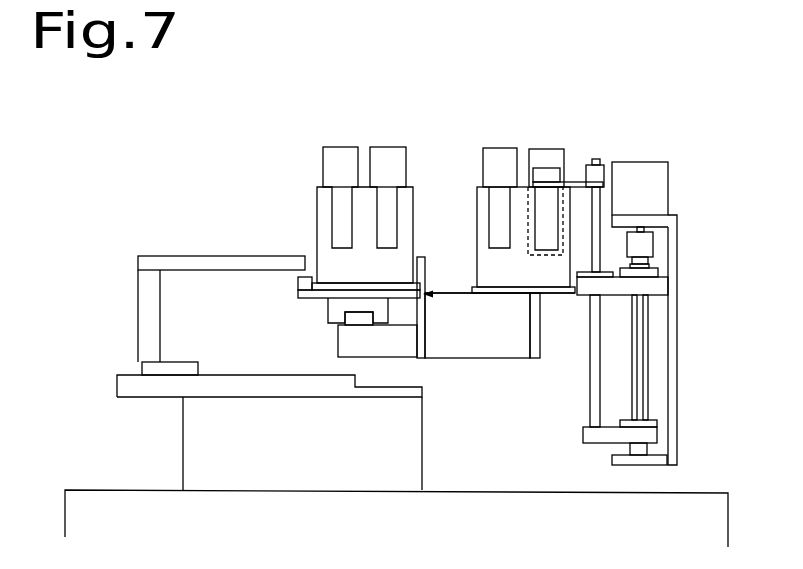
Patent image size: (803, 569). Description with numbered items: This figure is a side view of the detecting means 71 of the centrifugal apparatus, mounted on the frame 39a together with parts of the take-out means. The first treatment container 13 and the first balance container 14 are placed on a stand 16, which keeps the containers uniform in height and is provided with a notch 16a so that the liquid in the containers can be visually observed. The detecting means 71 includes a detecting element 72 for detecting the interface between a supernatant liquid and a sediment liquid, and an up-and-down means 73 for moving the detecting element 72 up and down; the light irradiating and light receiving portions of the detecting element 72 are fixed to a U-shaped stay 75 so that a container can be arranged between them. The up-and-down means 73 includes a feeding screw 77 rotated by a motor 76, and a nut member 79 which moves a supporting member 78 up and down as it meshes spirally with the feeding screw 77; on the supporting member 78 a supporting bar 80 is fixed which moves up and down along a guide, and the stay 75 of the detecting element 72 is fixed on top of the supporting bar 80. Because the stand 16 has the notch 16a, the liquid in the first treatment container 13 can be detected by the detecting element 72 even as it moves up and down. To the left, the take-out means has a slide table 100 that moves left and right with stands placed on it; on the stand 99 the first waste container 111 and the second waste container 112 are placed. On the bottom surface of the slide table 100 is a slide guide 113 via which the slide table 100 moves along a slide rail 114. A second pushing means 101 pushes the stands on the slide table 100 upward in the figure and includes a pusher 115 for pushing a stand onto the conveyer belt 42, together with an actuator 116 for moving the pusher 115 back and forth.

The frame 39a is at (678, 512).
The actuator 116 is at (213, 470).
The second pushing means 101 is at (150, 306).
The pusher 115 is at (208, 260).
The stand 99 is at (322, 225).
The second waste container 112 is at (334, 155).
The first waste container 111 is at (386, 155).
The slide table 100 is at (298, 290).
The slide guide 113 is at (330, 306).
The slide rail 114 is at (357, 318).
The conveyer belt 42 is at (478, 342).
The stand 16 is at (478, 225).
The first balance container 14 is at (497, 165).
The notch 16a is at (490, 240).
The first treatment container 13 is at (547, 165).
The detecting element 72 is at (560, 166).
The U-shaped stay 75 is at (575, 182).
The detecting means 71 is at (642, 141).
The motor 76 is at (650, 188).
The up-and-down means 73 is at (684, 249).
The supporting bar 80 is at (590, 365).
The feeding screw 77 is at (640, 335).
The nut member 79 is at (650, 425).
The supporting member 78 is at (605, 435).